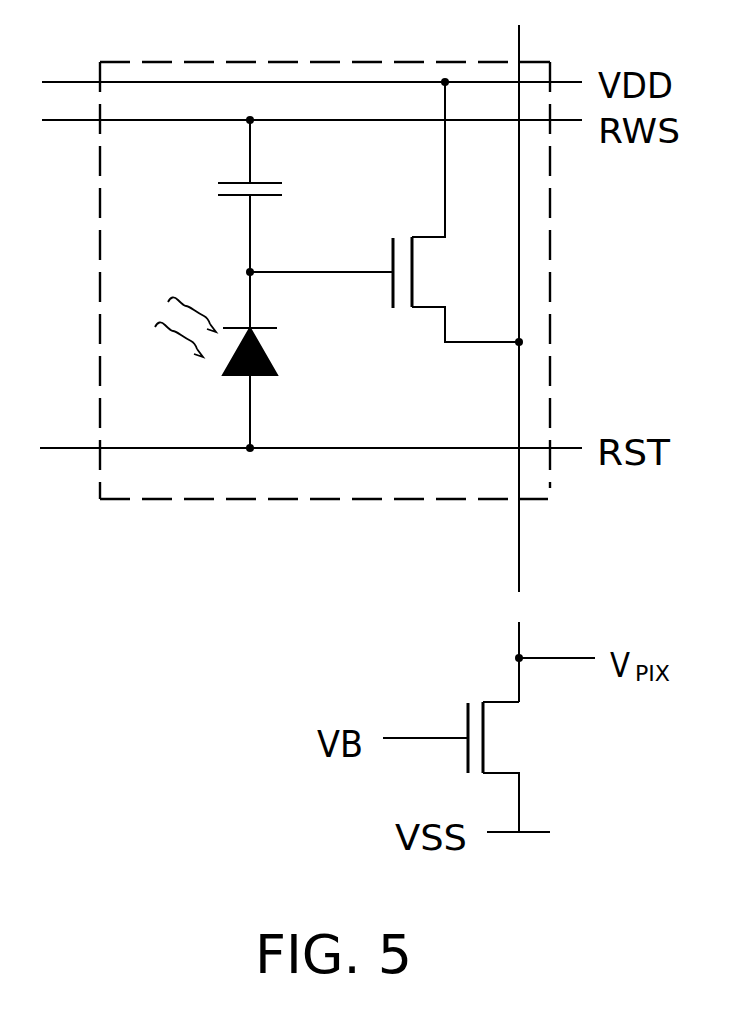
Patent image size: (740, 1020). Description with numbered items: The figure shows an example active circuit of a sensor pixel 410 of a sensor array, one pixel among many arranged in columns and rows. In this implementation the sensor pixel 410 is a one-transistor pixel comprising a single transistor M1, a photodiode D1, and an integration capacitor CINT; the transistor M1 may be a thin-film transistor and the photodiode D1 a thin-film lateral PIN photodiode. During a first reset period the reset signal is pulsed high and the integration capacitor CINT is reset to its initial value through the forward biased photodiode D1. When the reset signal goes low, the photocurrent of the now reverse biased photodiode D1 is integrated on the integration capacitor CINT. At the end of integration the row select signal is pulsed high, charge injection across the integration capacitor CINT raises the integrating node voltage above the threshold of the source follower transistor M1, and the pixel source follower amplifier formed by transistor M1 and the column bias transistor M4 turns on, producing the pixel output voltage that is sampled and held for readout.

The sensor pixel 410 is at (325, 341).
The photodiode D1 is at (216, 360).
The transistor M1 is at (456, 212).
The column bias transistor M4 is at (489, 743).
The integration capacitor CINT is at (213, 196).